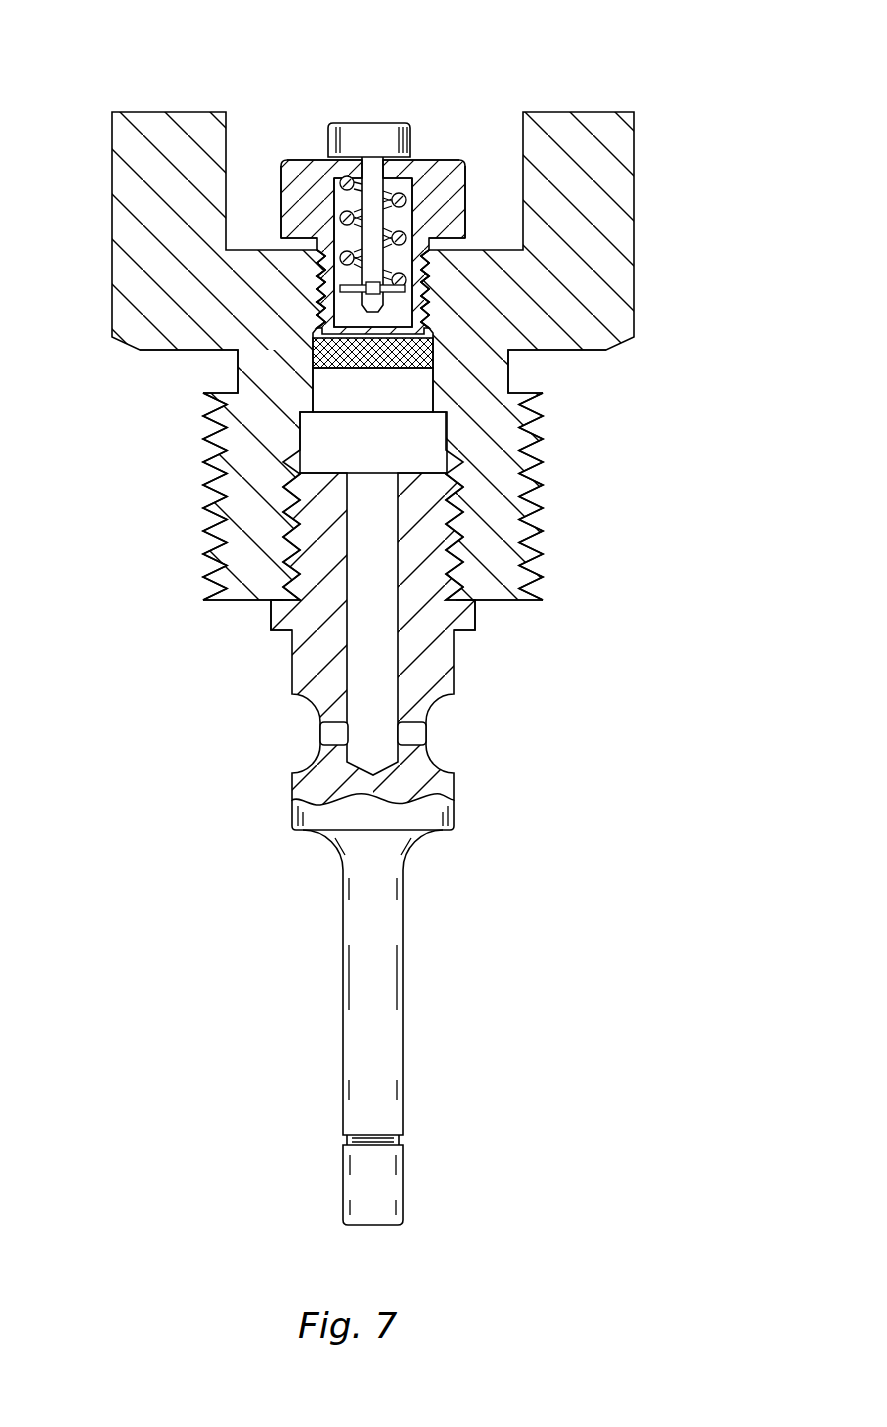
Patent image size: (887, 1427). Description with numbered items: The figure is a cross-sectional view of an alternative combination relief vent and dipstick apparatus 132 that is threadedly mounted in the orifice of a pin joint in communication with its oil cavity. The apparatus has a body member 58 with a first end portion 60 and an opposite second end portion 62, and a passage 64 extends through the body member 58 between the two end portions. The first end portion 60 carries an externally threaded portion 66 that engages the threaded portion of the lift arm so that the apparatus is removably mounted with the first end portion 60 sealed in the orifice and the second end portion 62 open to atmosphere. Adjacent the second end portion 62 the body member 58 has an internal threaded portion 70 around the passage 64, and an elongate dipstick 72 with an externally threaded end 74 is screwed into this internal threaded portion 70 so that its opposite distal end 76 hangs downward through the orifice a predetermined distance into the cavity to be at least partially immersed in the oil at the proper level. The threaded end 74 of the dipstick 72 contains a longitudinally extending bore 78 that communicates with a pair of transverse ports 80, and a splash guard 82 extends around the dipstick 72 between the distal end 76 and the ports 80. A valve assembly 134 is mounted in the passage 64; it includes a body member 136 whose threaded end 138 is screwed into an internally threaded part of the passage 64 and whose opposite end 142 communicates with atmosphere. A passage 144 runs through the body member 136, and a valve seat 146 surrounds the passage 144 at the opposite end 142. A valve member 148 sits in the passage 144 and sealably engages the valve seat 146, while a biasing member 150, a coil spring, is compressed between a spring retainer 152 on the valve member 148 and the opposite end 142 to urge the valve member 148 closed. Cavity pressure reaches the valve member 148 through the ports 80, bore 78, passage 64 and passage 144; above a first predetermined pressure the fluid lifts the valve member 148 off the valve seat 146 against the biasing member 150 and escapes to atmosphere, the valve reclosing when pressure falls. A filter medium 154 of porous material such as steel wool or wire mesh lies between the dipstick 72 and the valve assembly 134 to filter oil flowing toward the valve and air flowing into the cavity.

The combination relief vent and dipstick apparatus 132 is at (609, 838).
The second end portion 62 is at (636, 120).
The body member 58 is at (628, 352).
The externally threaded portion 66 is at (544, 500).
The first end portion 60 is at (540, 603).
The valve assembly 134 is at (287, 154).
The body member 136 is at (467, 187).
The opposite end 142 is at (465, 185).
The valve member 148 is at (408, 158).
The threaded end 138 is at (430, 296).
The biasing member 150 is at (430, 240).
The valve seat 146 is at (357, 122).
The passage 144 is at (348, 203).
The spring retainer 152 is at (340, 290).
The filter medium 154 is at (310, 377).
The passage 64 is at (400, 438).
The externally threaded end 74 is at (340, 473).
The bore 78 is at (364, 685).
The internal threaded portion 70 is at (280, 625).
The ports 80 is at (337, 732).
The splash guard 82 is at (462, 829).
The dipstick 72 is at (403, 1072).
The distal end 76 is at (342, 1190).